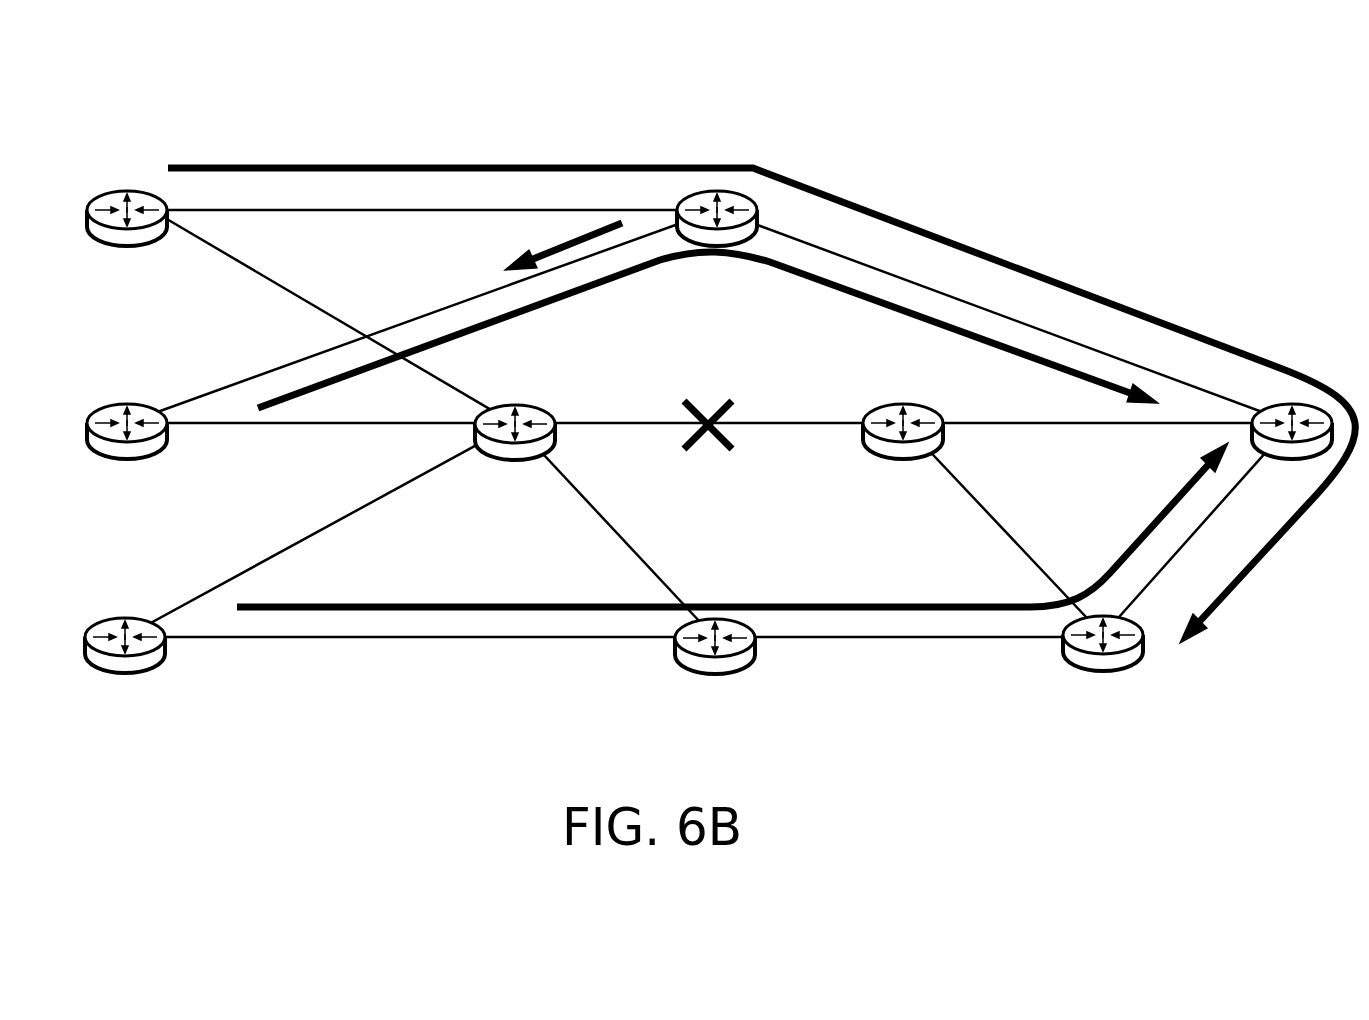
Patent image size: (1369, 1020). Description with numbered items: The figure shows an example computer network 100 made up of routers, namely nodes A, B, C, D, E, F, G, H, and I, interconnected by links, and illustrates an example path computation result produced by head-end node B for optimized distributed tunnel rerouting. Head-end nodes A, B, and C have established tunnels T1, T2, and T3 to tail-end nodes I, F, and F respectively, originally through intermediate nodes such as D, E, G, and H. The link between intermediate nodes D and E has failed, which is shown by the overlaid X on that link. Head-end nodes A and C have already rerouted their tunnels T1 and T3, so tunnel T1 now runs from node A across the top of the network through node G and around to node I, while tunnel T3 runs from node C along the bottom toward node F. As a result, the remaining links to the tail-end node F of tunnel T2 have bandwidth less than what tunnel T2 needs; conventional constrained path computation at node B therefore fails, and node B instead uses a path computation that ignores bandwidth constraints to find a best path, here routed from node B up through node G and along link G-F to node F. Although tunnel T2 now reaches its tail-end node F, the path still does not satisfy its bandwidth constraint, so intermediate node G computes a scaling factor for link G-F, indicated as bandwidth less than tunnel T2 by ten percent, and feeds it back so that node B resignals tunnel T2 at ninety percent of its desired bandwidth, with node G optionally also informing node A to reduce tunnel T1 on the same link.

The computer network 100 is at (141, 54).
The head-end node A is at (113, 190).
The head-end node B is at (116, 403).
The head-end node C is at (113, 618).
The intermediate node D is at (540, 407).
The intermediate node E is at (945, 440).
The tail-end node F is at (1300, 455).
The intermediate node G is at (710, 192).
The intermediate node H is at (675, 652).
The tail-end node I is at (1065, 658).
The tunnel T1 is at (250, 166).
The tunnel T2 is at (292, 404).
The tunnel T3 is at (385, 606).